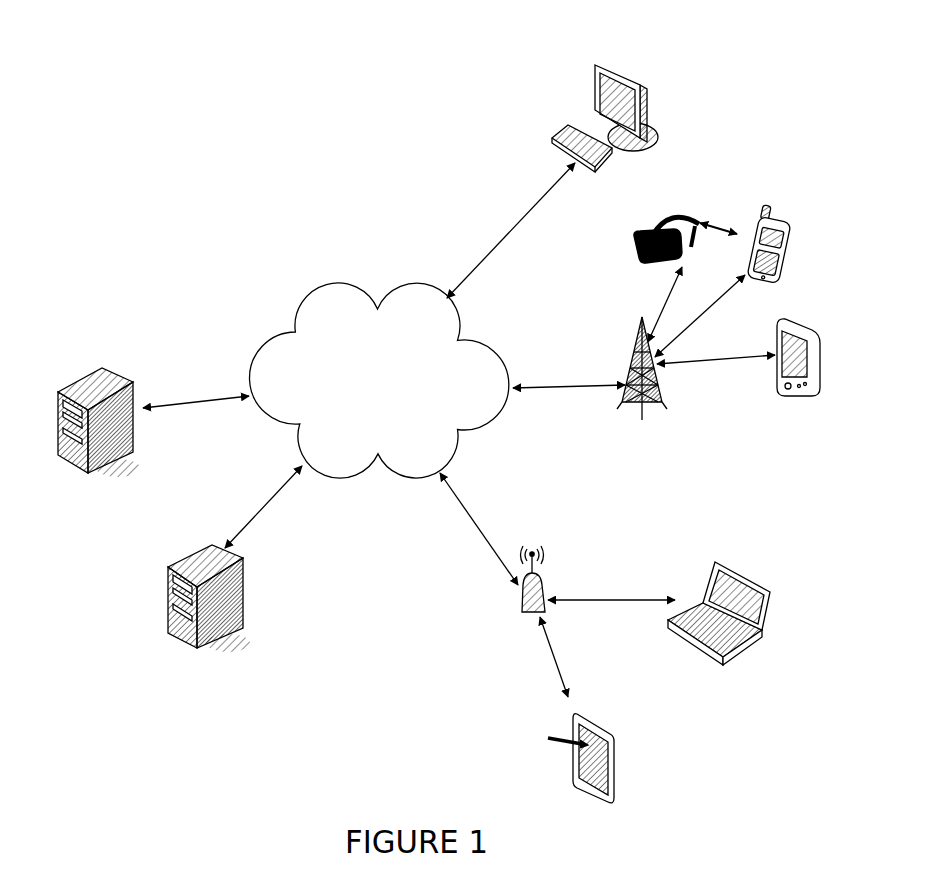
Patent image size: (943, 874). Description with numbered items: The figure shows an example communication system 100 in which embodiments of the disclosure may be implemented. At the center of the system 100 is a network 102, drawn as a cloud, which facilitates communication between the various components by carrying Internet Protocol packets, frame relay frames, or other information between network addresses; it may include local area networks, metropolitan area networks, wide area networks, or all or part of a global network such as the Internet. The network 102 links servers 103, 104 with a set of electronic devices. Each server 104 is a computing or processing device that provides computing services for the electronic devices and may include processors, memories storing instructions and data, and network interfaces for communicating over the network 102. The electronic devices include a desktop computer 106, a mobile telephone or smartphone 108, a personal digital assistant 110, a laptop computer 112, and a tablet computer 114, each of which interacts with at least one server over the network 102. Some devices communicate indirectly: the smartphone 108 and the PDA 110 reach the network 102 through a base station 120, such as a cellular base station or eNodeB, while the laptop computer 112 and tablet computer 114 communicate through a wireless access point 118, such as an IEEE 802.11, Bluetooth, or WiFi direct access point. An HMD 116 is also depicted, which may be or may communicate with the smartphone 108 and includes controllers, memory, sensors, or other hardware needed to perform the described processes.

The communication system 100 is at (218, 160).
The network 102 is at (298, 303).
The server 103 is at (185, 560).
The server 104 is at (78, 388).
The desktop computer 106 is at (593, 68).
The mobile telephone or smartphone 108 is at (788, 226).
The personal digital assistant (PDA) 110 is at (818, 323).
The laptop computer 112 is at (778, 600).
The tablet computer 114 is at (620, 750).
The HMD 116 is at (656, 214).
The wireless access point 118 is at (545, 593).
The base station 120 is at (667, 407).